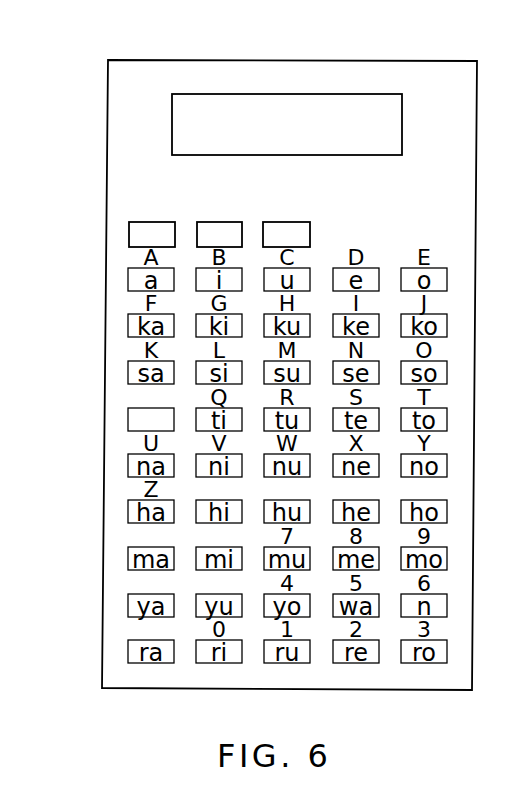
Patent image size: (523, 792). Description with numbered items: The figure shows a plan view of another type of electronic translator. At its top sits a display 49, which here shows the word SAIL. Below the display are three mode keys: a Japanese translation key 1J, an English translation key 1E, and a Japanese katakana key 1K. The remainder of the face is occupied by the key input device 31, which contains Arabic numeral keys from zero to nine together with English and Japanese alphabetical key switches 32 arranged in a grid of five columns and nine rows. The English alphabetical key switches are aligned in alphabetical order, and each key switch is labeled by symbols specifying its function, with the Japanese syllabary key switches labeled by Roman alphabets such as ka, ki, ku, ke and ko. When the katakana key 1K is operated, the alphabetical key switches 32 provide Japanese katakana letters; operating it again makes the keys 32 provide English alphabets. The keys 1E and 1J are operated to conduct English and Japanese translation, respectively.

The display 49 is at (390, 95).
The Japanese translation key 1J is at (162, 222).
The English translation key 1E is at (231, 222).
The Japanese katakana key 1K is at (299, 222).
The key input device 31 is at (104, 323).
The alphabetical key switches 32 is at (128, 416).